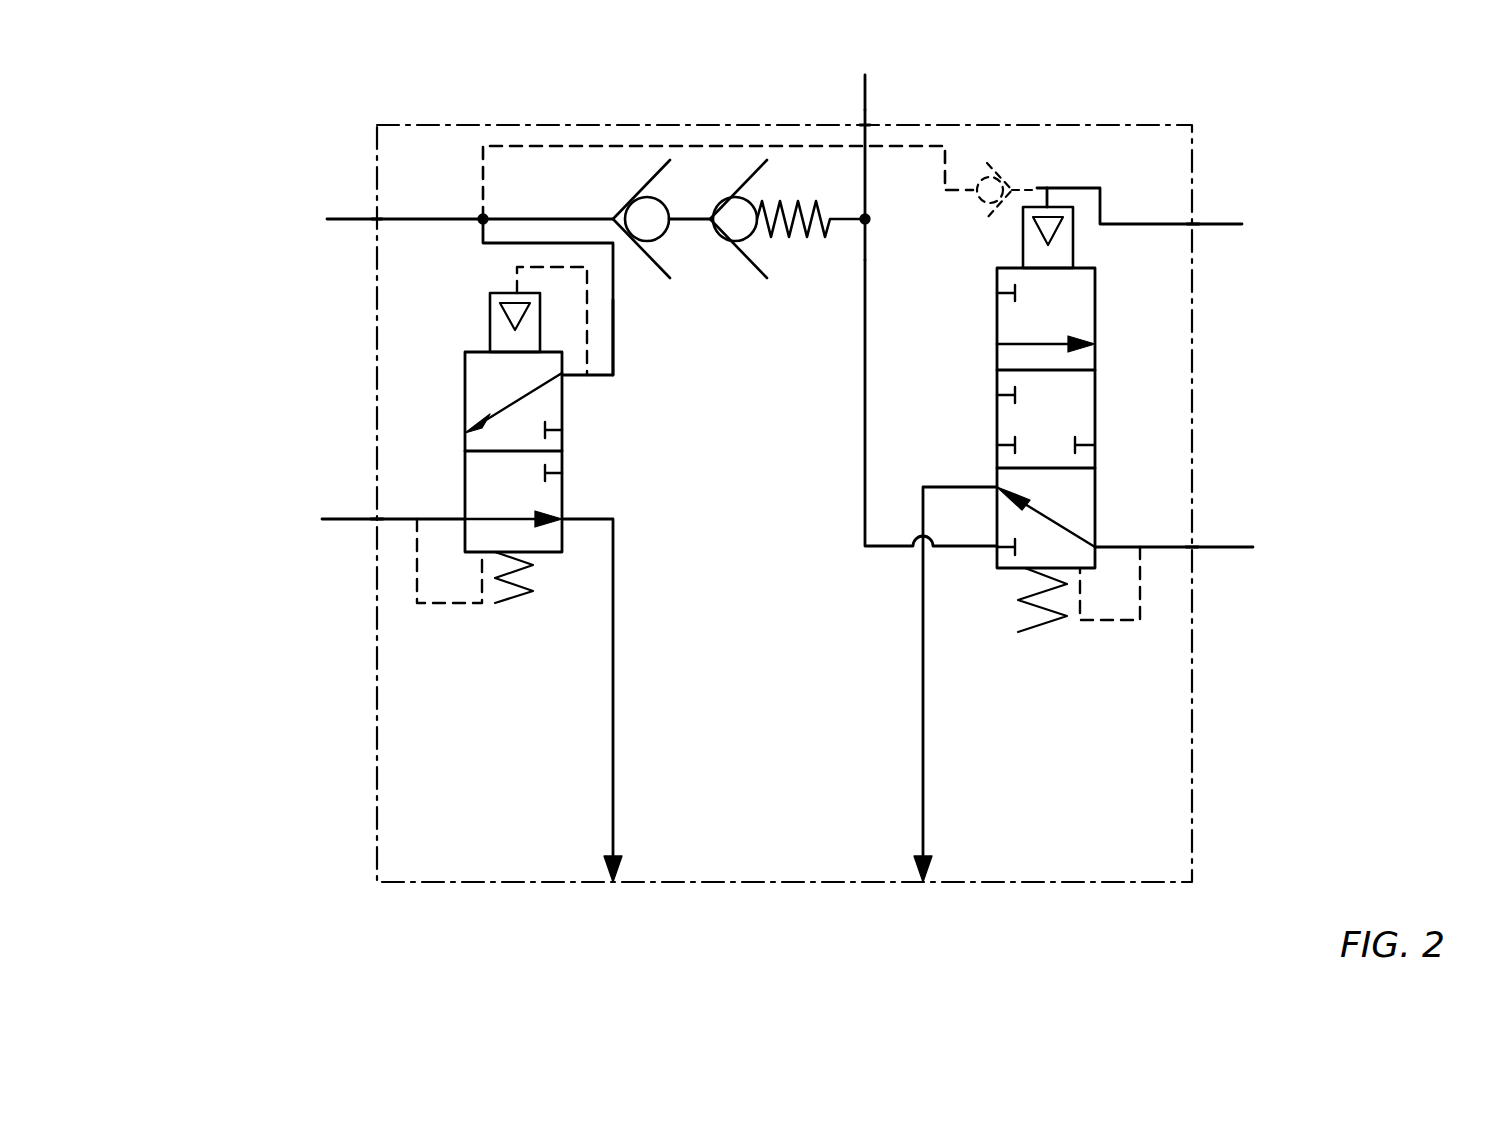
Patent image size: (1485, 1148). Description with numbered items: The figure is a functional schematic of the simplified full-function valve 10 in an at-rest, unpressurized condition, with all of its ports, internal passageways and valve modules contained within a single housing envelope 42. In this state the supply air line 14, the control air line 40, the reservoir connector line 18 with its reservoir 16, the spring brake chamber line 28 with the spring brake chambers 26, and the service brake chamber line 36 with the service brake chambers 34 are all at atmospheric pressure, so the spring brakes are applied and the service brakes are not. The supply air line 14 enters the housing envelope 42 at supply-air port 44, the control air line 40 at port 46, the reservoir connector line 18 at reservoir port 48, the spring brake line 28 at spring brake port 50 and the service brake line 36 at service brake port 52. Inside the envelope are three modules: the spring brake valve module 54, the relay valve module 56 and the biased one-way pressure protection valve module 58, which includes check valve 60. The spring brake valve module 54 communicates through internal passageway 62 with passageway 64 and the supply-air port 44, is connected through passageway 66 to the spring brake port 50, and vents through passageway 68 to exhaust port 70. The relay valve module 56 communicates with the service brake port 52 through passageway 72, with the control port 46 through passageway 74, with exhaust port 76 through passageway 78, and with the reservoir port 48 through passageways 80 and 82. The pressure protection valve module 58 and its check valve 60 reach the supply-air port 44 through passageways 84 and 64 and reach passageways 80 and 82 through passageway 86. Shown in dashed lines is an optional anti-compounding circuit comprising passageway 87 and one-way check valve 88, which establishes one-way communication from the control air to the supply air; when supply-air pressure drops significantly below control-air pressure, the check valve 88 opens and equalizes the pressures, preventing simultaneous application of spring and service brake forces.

The full-function valve 10 is at (445, 100).
The supply air line 14 is at (354, 222).
The reservoir 16 is at (905, 78).
The reservoir connector line 18 is at (865, 103).
The spring brake chambers 26 is at (268, 583).
The spring brake chamber line 28 is at (347, 519).
The service brake chambers 34 is at (1365, 605).
The service brake chamber line 36 is at (1232, 548).
The control air line 40 is at (1207, 224).
The housing envelope 42 is at (1105, 125).
The supply-air port 44 is at (377, 219).
The control air port 46 is at (1193, 228).
The reservoir port 48 is at (865, 125).
The spring brake port 50 is at (372, 522).
The service brake port 52 is at (1193, 548).
The spring brake valve module 54 is at (565, 404).
The relay valve module 56 is at (1098, 405).
The biased one-way pressure protection valve module 58 is at (755, 272).
The check valve 60 is at (665, 272).
The internal passageway 62 is at (613, 337).
The passageway 64 is at (428, 228).
The passageway 66 is at (402, 519).
The passageway 68 is at (613, 670).
The exhaust port 70 is at (620, 880).
The passageway 72 is at (1126, 547).
The passageway 74 is at (1157, 226).
The exhaust port 76 is at (930, 880).
The passageway 78 is at (923, 672).
The passageway 80 is at (865, 282).
The passageway 82 is at (865, 190).
The passageway 84 is at (558, 219).
The passageway 86 is at (850, 232).
The passageway 87 is at (483, 150).
The one-way check valve 88 is at (1027, 175).